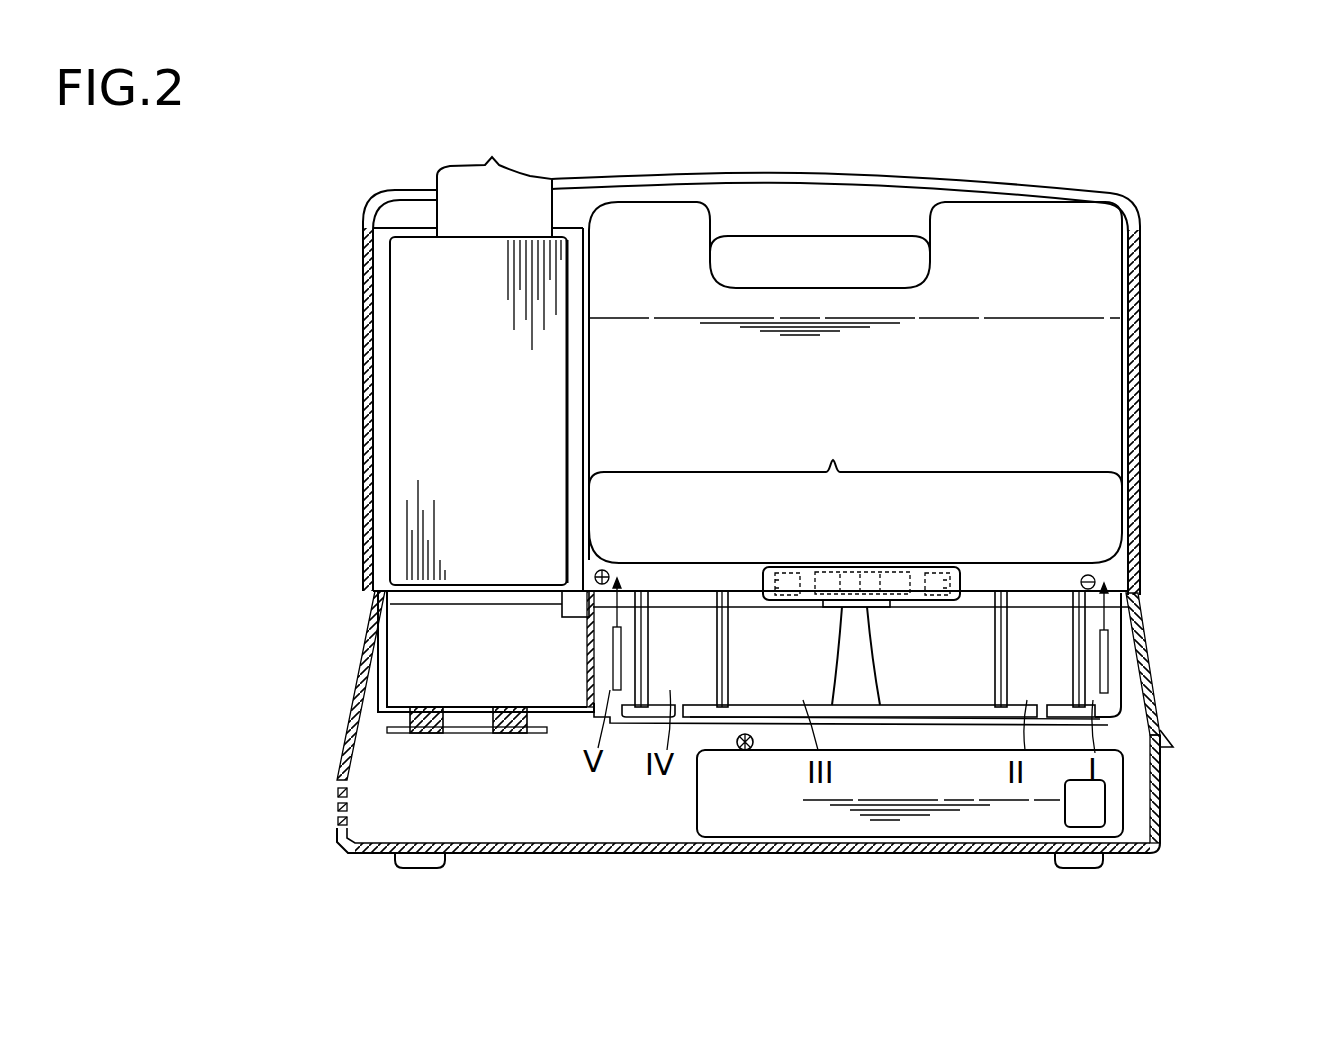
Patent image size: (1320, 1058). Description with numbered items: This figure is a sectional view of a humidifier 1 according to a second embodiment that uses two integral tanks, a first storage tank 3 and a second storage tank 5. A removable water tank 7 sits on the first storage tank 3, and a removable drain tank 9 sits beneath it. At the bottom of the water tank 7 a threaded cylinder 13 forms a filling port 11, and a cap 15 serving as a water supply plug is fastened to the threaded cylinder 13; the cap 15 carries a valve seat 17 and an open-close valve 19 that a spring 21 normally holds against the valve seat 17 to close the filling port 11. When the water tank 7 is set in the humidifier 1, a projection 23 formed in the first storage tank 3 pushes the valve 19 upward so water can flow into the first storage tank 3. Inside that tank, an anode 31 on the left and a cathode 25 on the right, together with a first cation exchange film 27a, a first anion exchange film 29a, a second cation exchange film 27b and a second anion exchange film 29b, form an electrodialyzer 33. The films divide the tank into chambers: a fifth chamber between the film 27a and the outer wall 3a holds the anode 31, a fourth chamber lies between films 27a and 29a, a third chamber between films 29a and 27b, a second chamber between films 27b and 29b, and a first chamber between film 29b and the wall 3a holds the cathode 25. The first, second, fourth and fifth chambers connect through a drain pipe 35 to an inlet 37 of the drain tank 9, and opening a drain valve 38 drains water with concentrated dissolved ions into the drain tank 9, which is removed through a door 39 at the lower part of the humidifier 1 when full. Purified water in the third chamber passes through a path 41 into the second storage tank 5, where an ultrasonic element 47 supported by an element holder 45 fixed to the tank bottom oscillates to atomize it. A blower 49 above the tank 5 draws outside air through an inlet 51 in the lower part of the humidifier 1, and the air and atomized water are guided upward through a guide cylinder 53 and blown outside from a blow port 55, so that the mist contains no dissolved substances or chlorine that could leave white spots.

The humidifier 1 is at (1145, 222).
The first storage tank 3 is at (1130, 693).
The outer wall of first storage tank 3a is at (585, 655).
The second storage tank 5 is at (377, 687).
The water tank 7 is at (1040, 218).
The drain tank 9 is at (1108, 833).
The filling port 11 is at (848, 610).
The threaded cylinder 13 is at (958, 600).
The cap 15 is at (950, 607).
The valve seat 17 is at (870, 612).
The open-close valve 19 is at (877, 567).
The spring 21 is at (797, 612).
The projection 23 is at (862, 686).
The cathode 25 is at (1110, 593).
The first cation exchange film 27a is at (642, 603).
The second cation exchange film 27b is at (1000, 593).
The first anion exchange film 29a is at (720, 600).
The second anion exchange film 29b is at (1073, 593).
The anode 31 is at (623, 640).
The electrodialyzer 33 is at (855, 456).
The drain pipe 35 is at (903, 725).
The inlet 37 is at (745, 755).
The drain valve 38 is at (758, 750).
The door 39 is at (1163, 788).
The path 41 is at (570, 598).
The element holder 45 is at (418, 735).
The ultrasonic element 47 is at (468, 735).
The blower 49 is at (390, 325).
The inlet 51 is at (337, 800).
The guide cylinder 53 is at (400, 470).
The blow port 55 is at (462, 165).